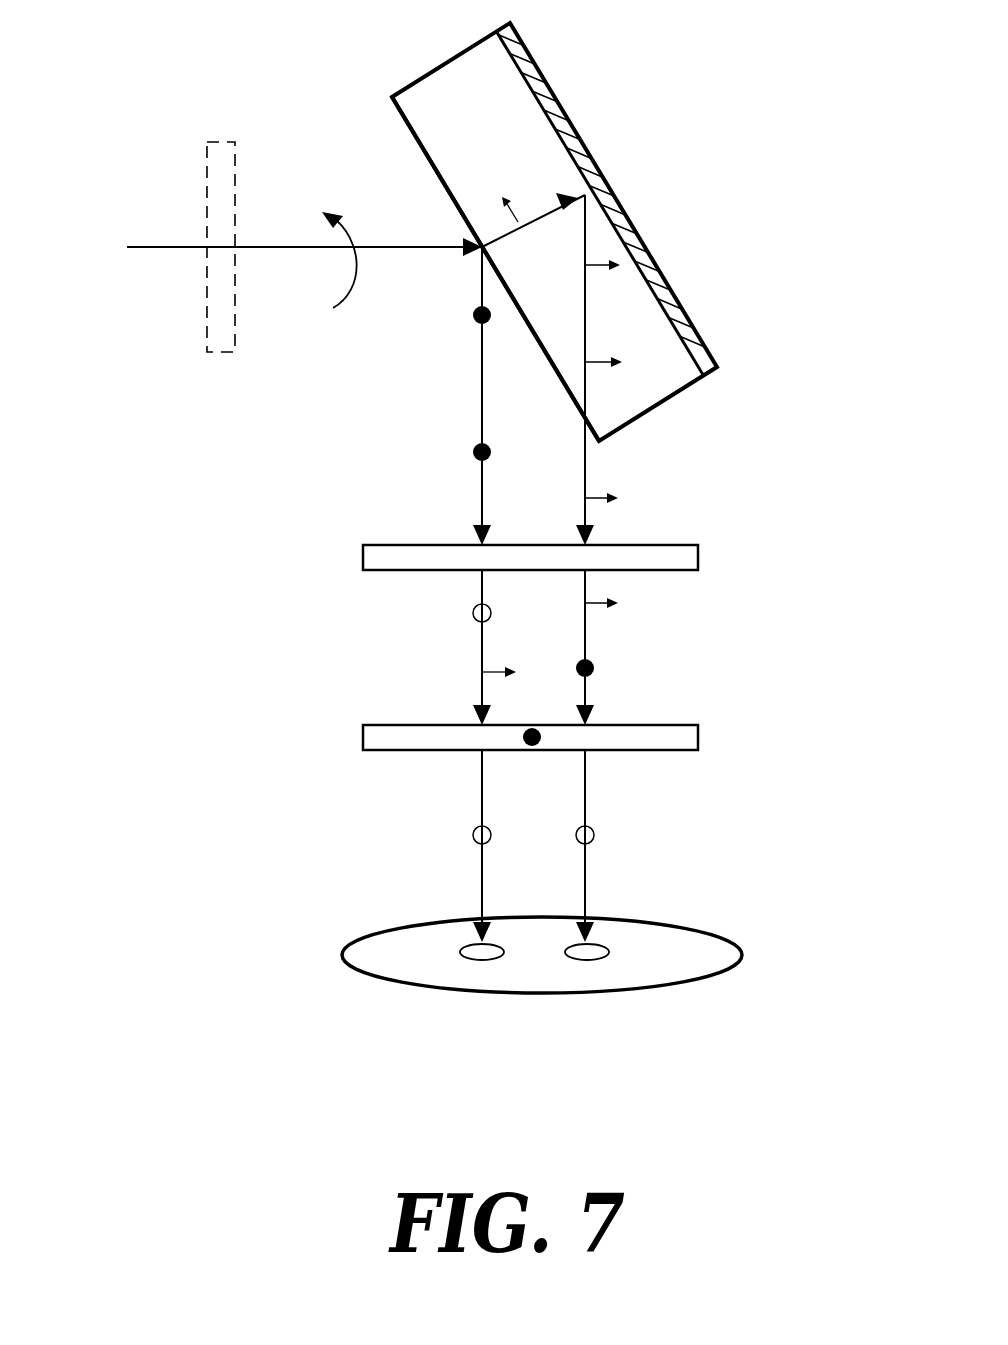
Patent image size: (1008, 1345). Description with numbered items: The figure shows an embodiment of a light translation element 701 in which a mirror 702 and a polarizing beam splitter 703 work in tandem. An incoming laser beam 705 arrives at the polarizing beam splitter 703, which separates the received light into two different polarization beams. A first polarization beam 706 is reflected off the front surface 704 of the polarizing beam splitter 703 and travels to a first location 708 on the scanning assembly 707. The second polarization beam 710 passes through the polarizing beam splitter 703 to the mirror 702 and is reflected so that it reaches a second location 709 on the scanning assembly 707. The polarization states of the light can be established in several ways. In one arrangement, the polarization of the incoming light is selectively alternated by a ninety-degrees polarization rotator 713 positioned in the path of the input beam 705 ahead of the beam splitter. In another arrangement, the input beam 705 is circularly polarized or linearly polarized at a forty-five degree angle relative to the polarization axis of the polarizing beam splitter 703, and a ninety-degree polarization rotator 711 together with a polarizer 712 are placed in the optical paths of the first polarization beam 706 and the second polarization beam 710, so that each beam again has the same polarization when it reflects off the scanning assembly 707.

The light translation element 701 is at (753, 190).
The mirror 702 is at (550, 87).
The polarizing beam splitter 703 is at (470, 75).
The front surface 704 is at (410, 183).
The laser beam 705 is at (141, 245).
The first polarization beam 706 is at (482, 405).
The scanning assembly 707 is at (343, 958).
The first location 708 is at (460, 950).
The second location 709 is at (603, 950).
The second polarization beam 710 is at (585, 458).
The ninety-degree polarization rotator 711 is at (363, 558).
The polarizer 712 is at (698, 734).
The ninety degrees polarization rotator 713 is at (225, 143).